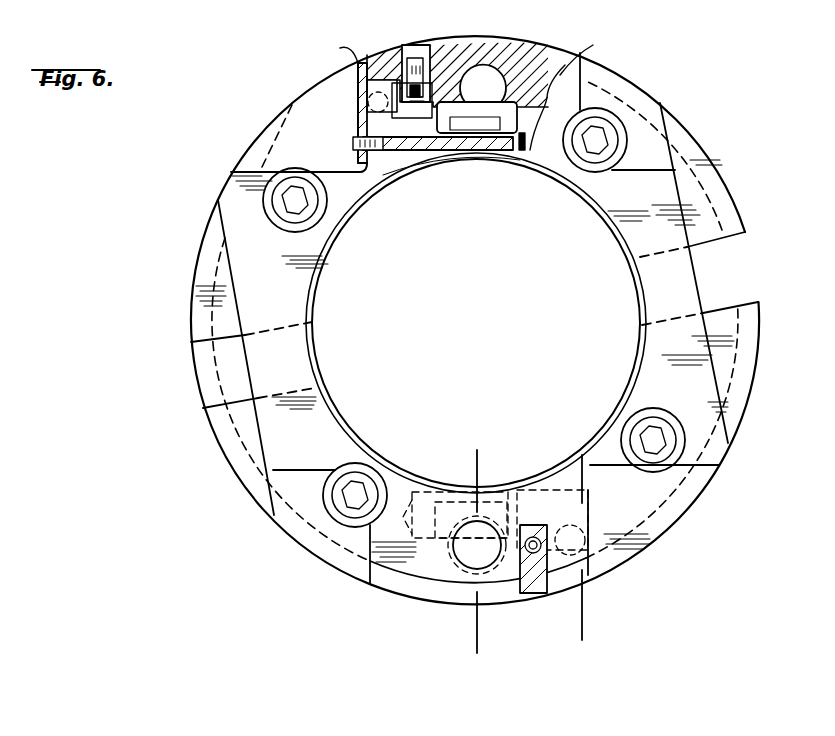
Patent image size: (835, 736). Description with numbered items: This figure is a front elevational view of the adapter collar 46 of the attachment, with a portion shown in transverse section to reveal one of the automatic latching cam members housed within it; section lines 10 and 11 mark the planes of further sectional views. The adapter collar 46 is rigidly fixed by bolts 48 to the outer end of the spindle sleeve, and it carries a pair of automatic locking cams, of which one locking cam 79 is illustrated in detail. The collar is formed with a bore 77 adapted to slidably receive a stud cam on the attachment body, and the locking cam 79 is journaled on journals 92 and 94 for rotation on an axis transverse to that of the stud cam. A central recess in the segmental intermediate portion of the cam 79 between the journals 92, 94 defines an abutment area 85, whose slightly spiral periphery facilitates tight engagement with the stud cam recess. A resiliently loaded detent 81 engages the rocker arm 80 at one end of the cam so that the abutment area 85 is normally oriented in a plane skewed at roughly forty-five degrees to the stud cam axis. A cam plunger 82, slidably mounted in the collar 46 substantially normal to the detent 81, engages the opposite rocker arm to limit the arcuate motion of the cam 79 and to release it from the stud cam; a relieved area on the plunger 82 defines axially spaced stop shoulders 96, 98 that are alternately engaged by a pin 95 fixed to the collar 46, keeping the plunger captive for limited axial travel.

The section line 10- 10 is at (547, 476).
The section line 11- 11 is at (440, 462).
The adapter collar 46 is at (629, 71).
The bolts 48 is at (316, 150).
The bore 77 is at (485, 70).
The automatic locking cam 79 is at (515, 148).
The rocker arm 80 is at (360, 63).
The resiliently loaded detent 81 is at (358, 80).
The cam plunger 82 is at (407, 46).
The abutment area 85 is at (522, 88).
The journal 92 is at (590, 50).
The journal 94 is at (452, 135).
The pin 95 is at (440, 80).
The stop shoulder 96 is at (400, 160).
The stop shoulder 98 is at (397, 80).